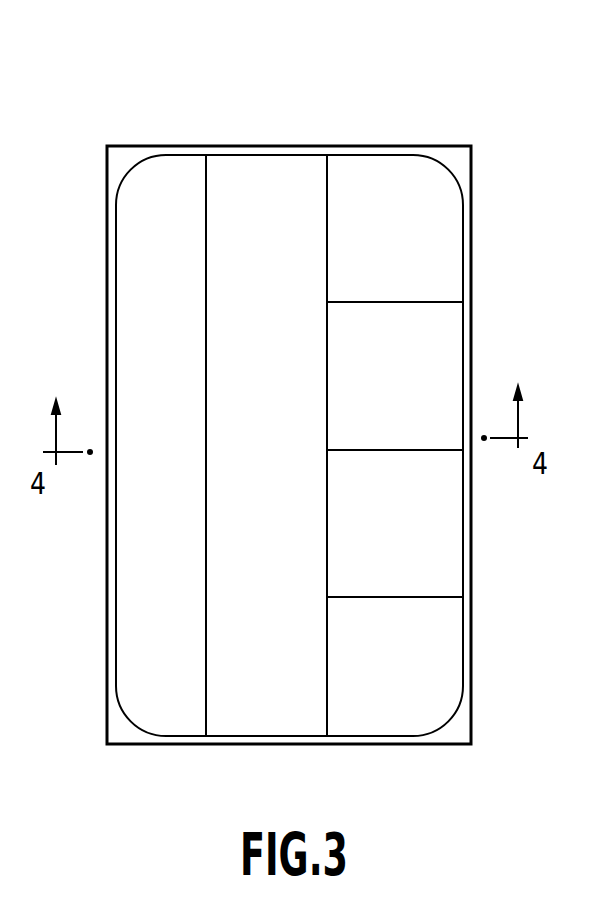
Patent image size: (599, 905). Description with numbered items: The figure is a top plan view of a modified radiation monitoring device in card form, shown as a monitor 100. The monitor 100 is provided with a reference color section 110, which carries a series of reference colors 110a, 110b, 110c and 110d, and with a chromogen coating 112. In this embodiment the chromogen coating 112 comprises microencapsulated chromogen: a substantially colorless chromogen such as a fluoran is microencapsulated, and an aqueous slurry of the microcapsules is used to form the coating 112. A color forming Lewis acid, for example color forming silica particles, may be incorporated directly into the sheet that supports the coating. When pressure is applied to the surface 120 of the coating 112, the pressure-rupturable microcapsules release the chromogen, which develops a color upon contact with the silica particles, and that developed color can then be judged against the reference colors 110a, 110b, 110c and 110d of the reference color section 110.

The monitor 100 is at (245, 90).
The reference color section 110 is at (381, 168).
The reference color 110a is at (420, 222).
The reference color 110b is at (420, 383).
The reference color 110c is at (367, 519).
The reference color 110d is at (423, 660).
The chromogen coating 112 is at (280, 170).
The surface 120 is at (286, 462).